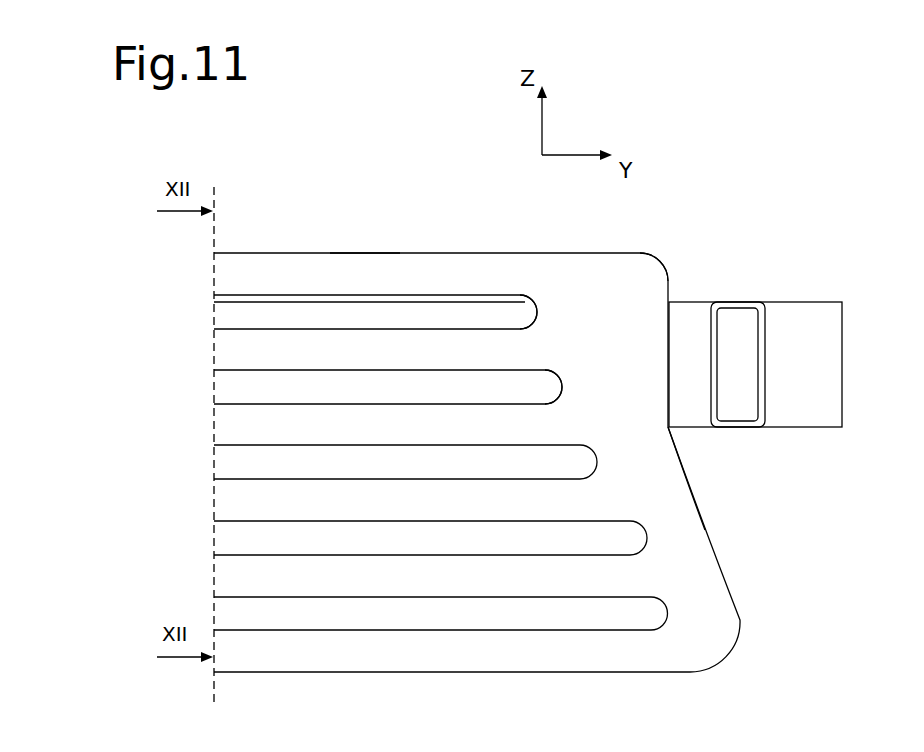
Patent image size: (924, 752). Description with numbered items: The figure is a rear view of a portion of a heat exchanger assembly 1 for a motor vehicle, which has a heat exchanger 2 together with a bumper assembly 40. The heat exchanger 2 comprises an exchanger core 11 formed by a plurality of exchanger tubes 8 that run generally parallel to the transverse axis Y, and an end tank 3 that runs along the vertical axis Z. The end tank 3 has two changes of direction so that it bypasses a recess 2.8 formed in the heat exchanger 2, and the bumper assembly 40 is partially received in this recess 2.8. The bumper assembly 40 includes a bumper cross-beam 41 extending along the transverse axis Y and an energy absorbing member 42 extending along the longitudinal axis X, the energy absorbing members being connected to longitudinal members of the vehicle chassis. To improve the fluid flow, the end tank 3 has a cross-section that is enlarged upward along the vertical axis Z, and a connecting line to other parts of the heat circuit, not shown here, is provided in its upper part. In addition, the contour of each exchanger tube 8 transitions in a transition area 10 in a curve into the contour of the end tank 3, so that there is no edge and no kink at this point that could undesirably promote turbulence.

The heat exchanger assembly 1 is at (757, 181).
The heat exchanger 2 is at (495, 232).
The end tank 3 is at (670, 285).
The exchanger tubes 8 is at (320, 253).
The transition area 10 is at (512, 306).
The exchanger core 11 is at (363, 224).
The bumper assembly 40 is at (766, 279).
The bumper cross-beam 41 is at (806, 428).
The energy absorbing member 42 is at (780, 310).
The recess 2.8 is at (698, 441).